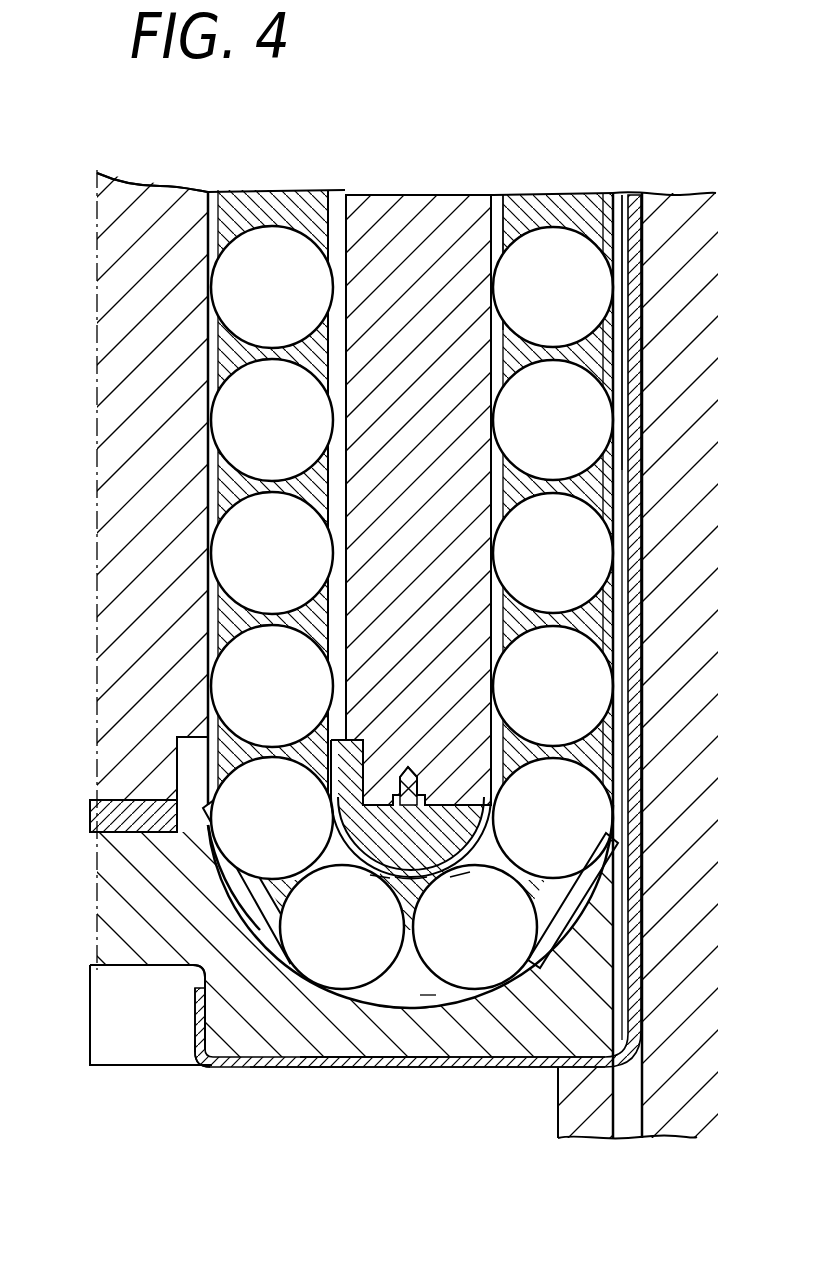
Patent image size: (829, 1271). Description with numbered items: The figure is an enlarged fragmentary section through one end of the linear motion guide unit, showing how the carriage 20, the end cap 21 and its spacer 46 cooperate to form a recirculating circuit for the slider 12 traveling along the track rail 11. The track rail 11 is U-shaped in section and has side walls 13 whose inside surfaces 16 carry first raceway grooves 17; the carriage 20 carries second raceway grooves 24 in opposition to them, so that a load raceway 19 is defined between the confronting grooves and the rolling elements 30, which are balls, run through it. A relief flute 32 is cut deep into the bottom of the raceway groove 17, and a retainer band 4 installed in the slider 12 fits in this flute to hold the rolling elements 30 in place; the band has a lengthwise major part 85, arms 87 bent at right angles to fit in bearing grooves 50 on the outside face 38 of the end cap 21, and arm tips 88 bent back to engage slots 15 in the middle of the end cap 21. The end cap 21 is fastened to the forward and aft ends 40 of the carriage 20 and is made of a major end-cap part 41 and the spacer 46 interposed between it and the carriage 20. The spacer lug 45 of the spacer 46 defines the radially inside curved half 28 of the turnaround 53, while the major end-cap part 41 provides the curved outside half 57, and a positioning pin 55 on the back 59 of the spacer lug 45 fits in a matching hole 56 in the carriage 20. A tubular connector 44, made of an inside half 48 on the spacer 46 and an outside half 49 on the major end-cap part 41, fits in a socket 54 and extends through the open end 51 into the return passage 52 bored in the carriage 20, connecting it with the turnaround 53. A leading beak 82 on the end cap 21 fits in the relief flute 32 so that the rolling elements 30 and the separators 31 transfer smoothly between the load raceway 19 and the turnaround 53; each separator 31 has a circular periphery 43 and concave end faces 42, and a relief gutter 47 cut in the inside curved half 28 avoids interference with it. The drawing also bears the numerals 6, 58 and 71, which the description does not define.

The retainer band 4 is at (632, 698).
The end cap 6 is at (197, 1101).
The track rail 11 is at (682, 627).
The slider 12 is at (205, 190).
The side walls 13 is at (670, 940).
The slots 15 is at (137, 1010).
The inside surfaces 16 is at (556, 1150).
The first raceway grooves 17 is at (618, 372).
The load raceway 19 is at (618, 233).
The carriage 20 is at (426, 347).
The end cap 21 is at (343, 1027).
The second raceway grooves 24 is at (513, 322).
The radially inside curved half 28 is at (460, 880).
The rolling elements 30 is at (259, 300).
The separator 31 is at (312, 352).
The relief flute 32 is at (643, 583).
The outside face 38 is at (310, 1062).
The forward and aft ends 40 is at (215, 850).
The major end-cap part 41 is at (237, 1033).
The end faces 42 is at (230, 372).
The circular periphery 43 is at (376, 340).
The tubular connector 44 is at (193, 797).
The spacer lug 45 is at (407, 885).
The spacer 46 is at (100, 815).
The relief gutter 47 is at (380, 880).
The inside half 48 is at (240, 880).
The outside half 49 is at (200, 770).
The bearing grooves 50 is at (395, 1005).
The open end 51 is at (350, 738).
The return passage 52 is at (337, 268).
The turnaround 53 is at (428, 997).
The socket 54 is at (185, 743).
The positioning pin 55 is at (424, 782).
The matching holes 56 is at (404, 766).
The curved outside half 57 is at (580, 912).
The side wall 58 is at (617, 312).
The back 59 is at (600, 830).
The recess corner 71 is at (193, 1003).
The leading beak 82 is at (645, 882).
The major part 85 is at (635, 260).
The arms 87 is at (457, 1070).
The arm tips 88 is at (190, 1025).